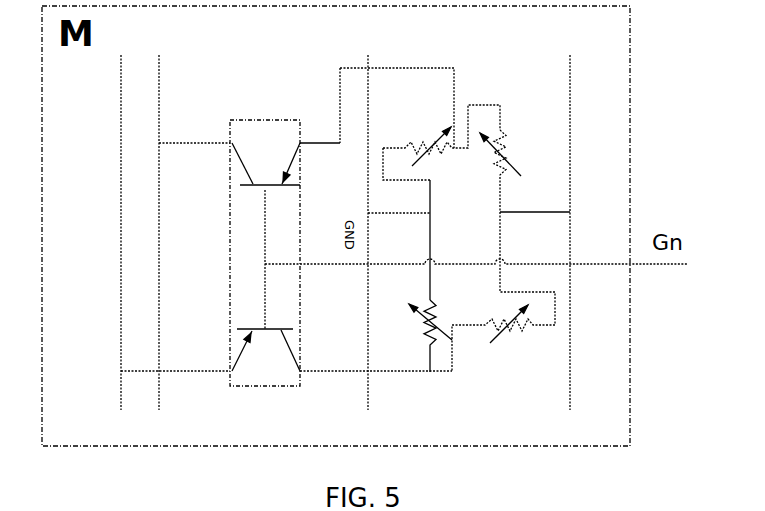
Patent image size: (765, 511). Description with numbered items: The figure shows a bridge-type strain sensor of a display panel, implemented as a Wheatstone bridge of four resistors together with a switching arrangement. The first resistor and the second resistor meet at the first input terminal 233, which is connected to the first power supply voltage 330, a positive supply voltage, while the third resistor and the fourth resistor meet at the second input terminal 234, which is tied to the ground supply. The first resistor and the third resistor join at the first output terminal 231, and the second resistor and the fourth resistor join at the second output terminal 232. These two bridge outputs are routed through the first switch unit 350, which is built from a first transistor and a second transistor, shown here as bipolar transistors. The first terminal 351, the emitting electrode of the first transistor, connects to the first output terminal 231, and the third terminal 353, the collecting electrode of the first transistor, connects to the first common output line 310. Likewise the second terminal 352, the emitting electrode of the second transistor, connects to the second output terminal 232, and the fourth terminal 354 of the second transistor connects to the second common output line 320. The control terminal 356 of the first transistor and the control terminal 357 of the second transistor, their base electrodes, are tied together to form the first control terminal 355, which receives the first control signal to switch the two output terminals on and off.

The first common output line 310 is at (159, 88).
The second common output line 320 is at (121, 113).
The first power supply voltage 330 is at (570, 92).
The first switch unit 350 is at (262, 388).
The first terminal 351 is at (302, 143).
The second terminal 352 is at (300, 371).
The third terminal 353 is at (230, 143).
The fourth terminal 354 is at (232, 371).
The first control terminal 355 is at (302, 266).
The control terminal of first transistor 356 is at (266, 192).
The control terminal of second transistor 357 is at (266, 310).
The first output terminal 231 is at (455, 150).
The second output terminal 232 is at (430, 372).
The first input terminal 233 is at (500, 211).
The second input terminal 234 is at (430, 214).